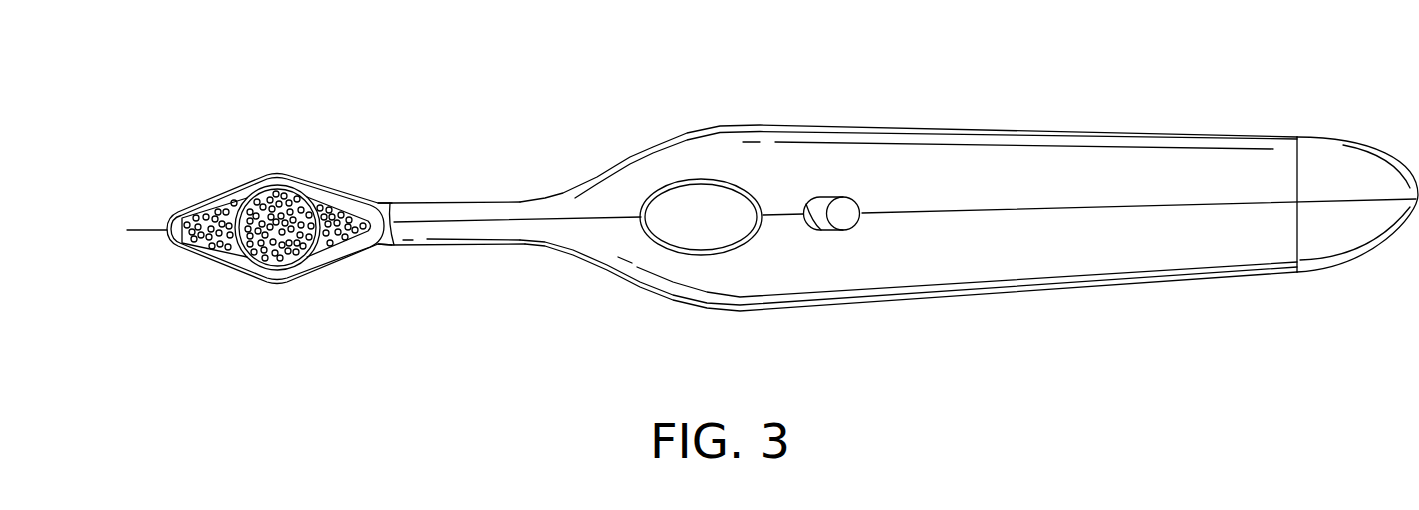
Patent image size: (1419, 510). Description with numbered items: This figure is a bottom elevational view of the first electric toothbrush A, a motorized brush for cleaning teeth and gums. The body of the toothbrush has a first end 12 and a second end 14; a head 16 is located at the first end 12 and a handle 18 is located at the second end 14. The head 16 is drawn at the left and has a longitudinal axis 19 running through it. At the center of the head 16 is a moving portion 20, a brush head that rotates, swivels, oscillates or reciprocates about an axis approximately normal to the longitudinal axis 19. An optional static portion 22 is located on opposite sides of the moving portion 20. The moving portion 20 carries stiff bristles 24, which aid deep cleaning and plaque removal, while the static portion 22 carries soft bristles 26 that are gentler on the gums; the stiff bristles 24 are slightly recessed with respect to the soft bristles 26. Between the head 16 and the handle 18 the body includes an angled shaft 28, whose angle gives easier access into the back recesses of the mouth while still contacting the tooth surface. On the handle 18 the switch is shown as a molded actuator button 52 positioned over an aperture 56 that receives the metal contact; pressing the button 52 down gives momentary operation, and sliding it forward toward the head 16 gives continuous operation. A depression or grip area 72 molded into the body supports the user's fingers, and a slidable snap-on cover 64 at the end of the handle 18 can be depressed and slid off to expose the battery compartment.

The first end 12 is at (383, 247).
The second end 14 is at (1253, 247).
The head 16 is at (198, 197).
The handle 18 is at (1220, 165).
The longitudinal axis 19 is at (138, 230).
The moving portion 20 is at (277, 178).
The static portion 22 is at (338, 205).
The stiff bristles 24 is at (277, 283).
The soft bristles 26 is at (190, 257).
The angled shaft 28 is at (445, 232).
The actuator button 52 is at (845, 203).
The aperture 56 is at (822, 231).
The snap-on cover 64 is at (1338, 238).
The grip area 72 is at (702, 200).
The first electric toothbrush A is at (868, 100).